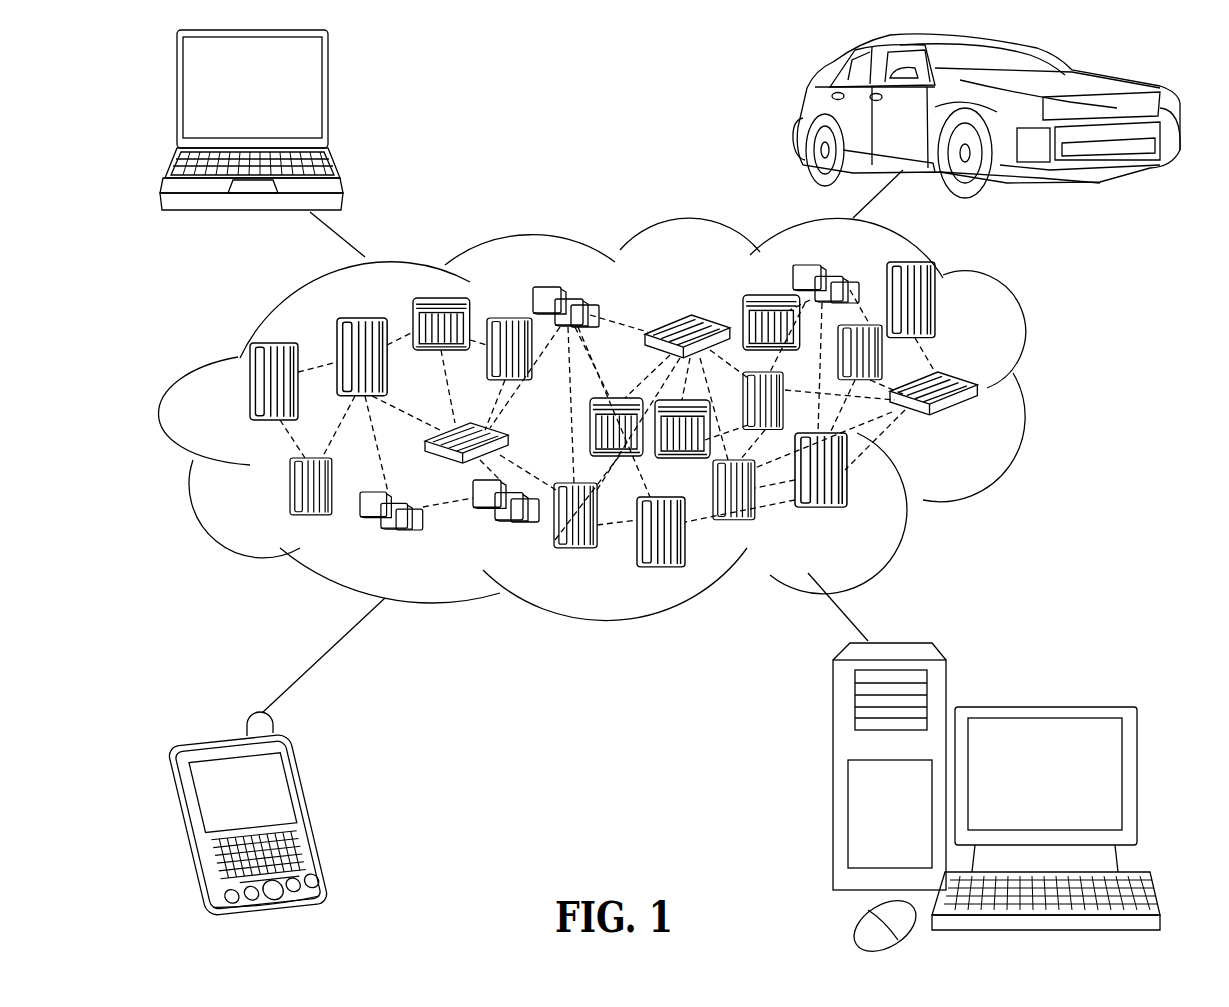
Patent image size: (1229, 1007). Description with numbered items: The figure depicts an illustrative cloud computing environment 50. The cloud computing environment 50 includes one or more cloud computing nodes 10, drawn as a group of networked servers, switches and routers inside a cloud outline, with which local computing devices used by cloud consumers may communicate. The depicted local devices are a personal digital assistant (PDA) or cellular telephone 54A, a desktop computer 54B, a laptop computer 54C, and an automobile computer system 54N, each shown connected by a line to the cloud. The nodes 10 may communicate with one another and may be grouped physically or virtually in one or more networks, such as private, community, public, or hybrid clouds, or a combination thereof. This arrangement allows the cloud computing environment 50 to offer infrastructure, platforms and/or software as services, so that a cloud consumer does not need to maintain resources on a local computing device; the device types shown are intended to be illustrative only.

The cloud computing environment 50 is at (1043, 392).
The cloud computing nodes 10 is at (992, 430).
The personal digital assistant (PDA) or cellular telephone 54A is at (313, 810).
The desktop computer 54B is at (1045, 705).
The laptop computer 54C is at (328, 100).
The automobile computer system 54N is at (800, 100).